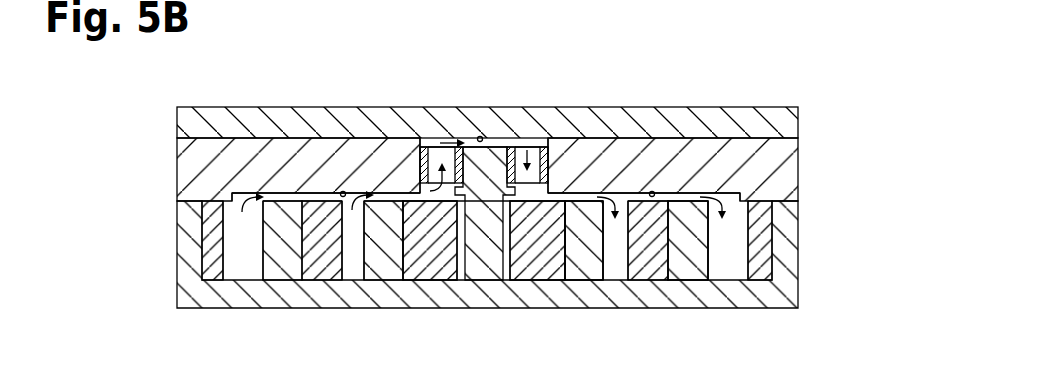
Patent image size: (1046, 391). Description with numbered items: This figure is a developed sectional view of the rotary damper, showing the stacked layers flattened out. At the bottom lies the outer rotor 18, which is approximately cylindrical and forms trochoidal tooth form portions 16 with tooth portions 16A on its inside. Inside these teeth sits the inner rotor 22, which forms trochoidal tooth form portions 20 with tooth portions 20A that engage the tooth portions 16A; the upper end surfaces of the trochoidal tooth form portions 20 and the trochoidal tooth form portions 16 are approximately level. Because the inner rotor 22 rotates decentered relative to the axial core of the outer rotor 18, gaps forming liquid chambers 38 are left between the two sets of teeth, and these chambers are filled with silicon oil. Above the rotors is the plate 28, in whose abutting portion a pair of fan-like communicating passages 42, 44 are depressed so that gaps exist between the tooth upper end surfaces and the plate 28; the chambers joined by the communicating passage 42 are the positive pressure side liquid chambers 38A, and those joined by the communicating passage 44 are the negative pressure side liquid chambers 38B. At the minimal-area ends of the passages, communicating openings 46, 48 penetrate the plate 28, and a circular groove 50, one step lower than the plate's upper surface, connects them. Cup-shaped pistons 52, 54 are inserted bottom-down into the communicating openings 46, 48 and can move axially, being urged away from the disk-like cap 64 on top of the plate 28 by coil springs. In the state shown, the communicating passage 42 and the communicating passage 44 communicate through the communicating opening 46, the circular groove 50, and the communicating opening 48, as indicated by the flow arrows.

The cap 64 is at (787, 123).
The plate 28 is at (787, 171).
The inner rotor 22 is at (779, 228).
The outer rotor 18 is at (801, 262).
The communicating passage 42 is at (344, 191).
The communicating passage 44 is at (654, 191).
The piston 52 is at (418, 175).
The communicating opening 46 is at (440, 146).
The circular groove 50 is at (480, 136).
The communicating opening 48 is at (527, 146).
The piston 54 is at (551, 176).
The positive pressure side liquid chambers 38A is at (297, 276).
The negative pressure side liquid chambers 38B is at (622, 233).
The liquid chambers 38 is at (355, 268).
The tooth portions 20A is at (473, 283).
The trochoidal tooth form portions 20 is at (537, 240).
The tooth portions 16A is at (632, 277).
The trochoidal tooth form portions 16 is at (678, 257).